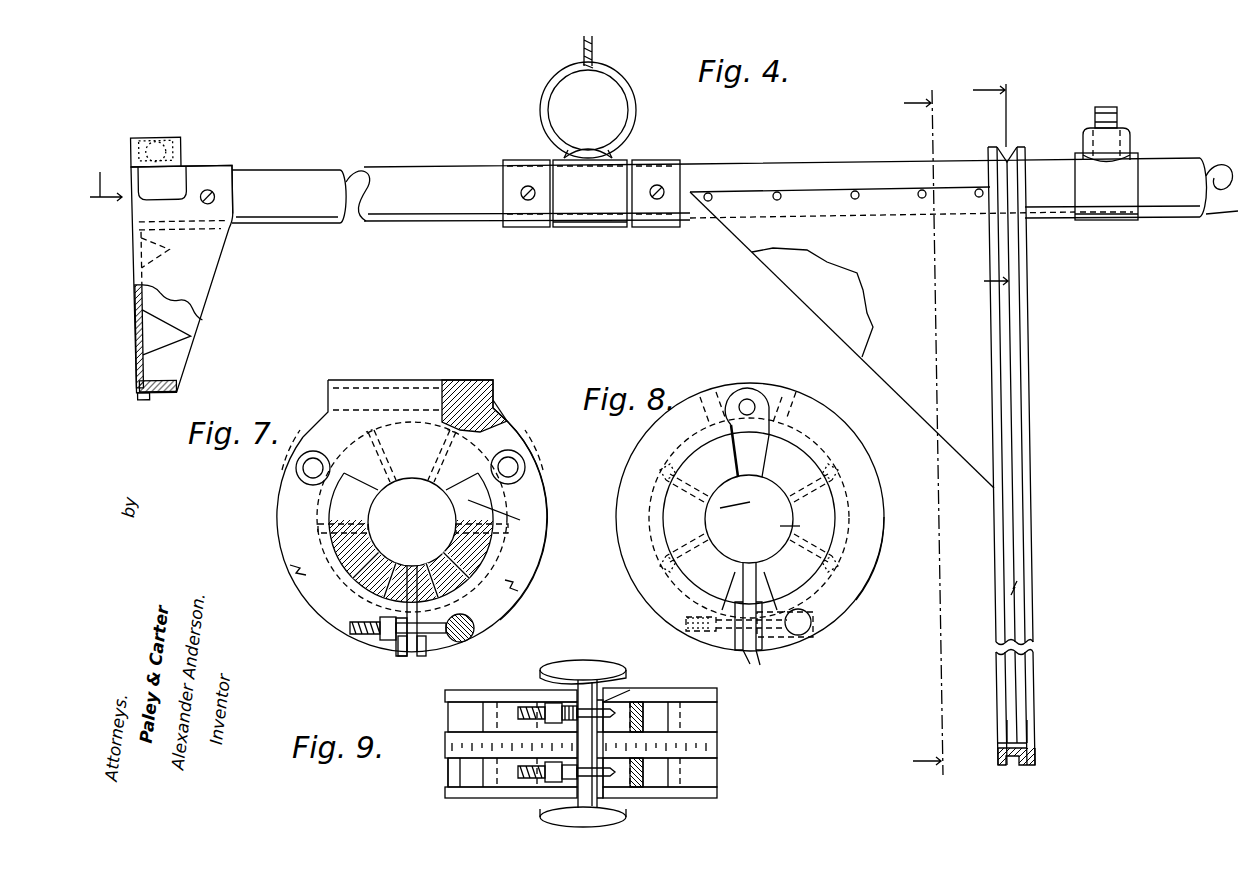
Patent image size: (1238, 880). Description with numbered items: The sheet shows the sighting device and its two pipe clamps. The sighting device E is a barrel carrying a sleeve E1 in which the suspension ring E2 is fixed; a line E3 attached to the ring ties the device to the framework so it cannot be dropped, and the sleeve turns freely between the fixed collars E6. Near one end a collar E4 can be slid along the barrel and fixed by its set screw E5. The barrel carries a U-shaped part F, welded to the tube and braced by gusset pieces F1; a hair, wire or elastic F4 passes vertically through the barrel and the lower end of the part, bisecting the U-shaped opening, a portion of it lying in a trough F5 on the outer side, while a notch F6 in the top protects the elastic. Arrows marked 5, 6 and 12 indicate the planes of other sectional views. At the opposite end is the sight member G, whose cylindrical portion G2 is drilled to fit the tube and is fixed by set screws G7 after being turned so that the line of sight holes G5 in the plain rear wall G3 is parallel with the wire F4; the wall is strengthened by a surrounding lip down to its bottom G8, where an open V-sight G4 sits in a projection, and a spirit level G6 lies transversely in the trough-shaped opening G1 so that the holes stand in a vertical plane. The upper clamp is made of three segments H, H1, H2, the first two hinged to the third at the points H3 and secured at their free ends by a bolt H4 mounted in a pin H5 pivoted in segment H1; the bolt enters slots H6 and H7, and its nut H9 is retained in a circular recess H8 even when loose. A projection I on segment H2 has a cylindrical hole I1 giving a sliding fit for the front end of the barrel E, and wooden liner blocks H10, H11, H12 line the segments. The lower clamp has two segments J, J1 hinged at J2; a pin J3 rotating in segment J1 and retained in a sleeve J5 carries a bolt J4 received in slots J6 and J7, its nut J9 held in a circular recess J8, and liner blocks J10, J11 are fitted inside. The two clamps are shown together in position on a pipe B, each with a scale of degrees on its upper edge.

In FIG. 4, the section line 5 is at (106, 175).
In FIG. 4, the section line 6 is at (923, 429).
In FIG. 4, the section line 12 is at (982, 176).
In FIG. 4, the sight member G is at (195, 291).
In FIG. 4, the trough-shaped opening G1 is at (170, 140).
In FIG. 4, the cylindrical portion G2 is at (203, 166).
In FIG. 4, the rear wall G3 is at (133, 322).
In FIG. 4, the open V-sight G4 is at (138, 398).
In FIG. 4, the sight holes G5 is at (150, 245).
In FIG. 4, the spirit level G6 is at (150, 140).
In FIG. 4, the set screws G7 is at (212, 194).
In FIG. 4, the bracket bottom pad G8 is at (175, 384).
In FIG. 4, the sighting device E is at (336, 174).
In FIG. 4, the sleeve E1 is at (603, 228).
In FIG. 4, the suspension ring E2 is at (543, 100).
In FIG. 4, the line E3 is at (580, 38).
In FIG. 4, the collar E4 is at (1110, 221).
In FIG. 4, the set screw E5 is at (1117, 116).
In FIG. 4, the collar E6 is at (520, 160).
In FIG. 4, the U-shaped part F is at (1012, 518).
In FIG. 4, the gusset pieces F1 is at (782, 273).
In FIG. 4, the wire or elastic F4 is at (1004, 431).
In FIG. 4, the trough F5 is at (1014, 372).
In FIG. 4, the notch F6 is at (1009, 158).
In FIG. 7, the clamp segment H is at (290, 566).
In FIG. 9, the clamp segment H is at (485, 712).
In FIG. 7, the clamp segment H1 is at (520, 576).
In FIG. 9, the clamp segment H1 is at (672, 712).
In FIG. 7, the clamp segment H2 is at (500, 422).
In FIG. 7, the hinge points H3 is at (303, 468).
In FIG. 7, the bolt H4 is at (355, 628).
In FIG. 9, the bolt H4 is at (525, 706).
In FIG. 7, the pin H5 is at (476, 628).
In FIG. 9, the pin H5 is at (640, 690).
In FIG. 7, the slot H6 is at (404, 650).
In FIG. 9, the slot H6 is at (569, 704).
In FIG. 7, the slot H7 is at (421, 652).
In FIG. 9, the slot H7 is at (601, 698).
In FIG. 7, the circular recess H8 is at (400, 643).
In FIG. 7, the nut H9 is at (379, 620).
In FIG. 9, the nut H9 is at (553, 702).
In FIG. 7, the wooden liner block H10 is at (345, 548).
In FIG. 7, the wooden liner block H11 is at (462, 546).
In FIG. 7, the wooden liner block H12 is at (415, 472).
In FIG. 7, the projection I is at (420, 378).
In FIG. 7, the cylindrical hole I1 is at (470, 392).
In FIG. 8, the clamp segment J is at (627, 490).
In FIG. 9, the clamp segment J is at (492, 770).
In FIG. 8, the clamp segment J1 is at (868, 558).
In FIG. 9, the clamp segment J1 is at (676, 770).
In FIG. 8, the hinge J2 is at (745, 400).
In FIG. 8, the pin J3 is at (810, 628).
In FIG. 9, the pin J3 is at (645, 790).
In FIG. 8, the bolt J4 is at (762, 650).
In FIG. 9, the bolt J4 is at (490, 772).
In FIG. 8, the sleeve J5 is at (814, 622).
In FIG. 8, the slot J6 is at (723, 589).
In FIG. 9, the slot J6 is at (556, 782).
In FIG. 8, the slot J7 is at (771, 589).
In FIG. 9, the slot J7 is at (603, 792).
In FIG. 8, the circular recess J8 is at (752, 650).
In FIG. 8, the nut J9 is at (700, 632).
In FIG. 9, the nut J9 is at (530, 780).
In FIG. 8, the bore J10 is at (700, 514).
In FIG. 8, the bore J11 is at (800, 526).
In FIG. 9, the rod B is at (584, 660).